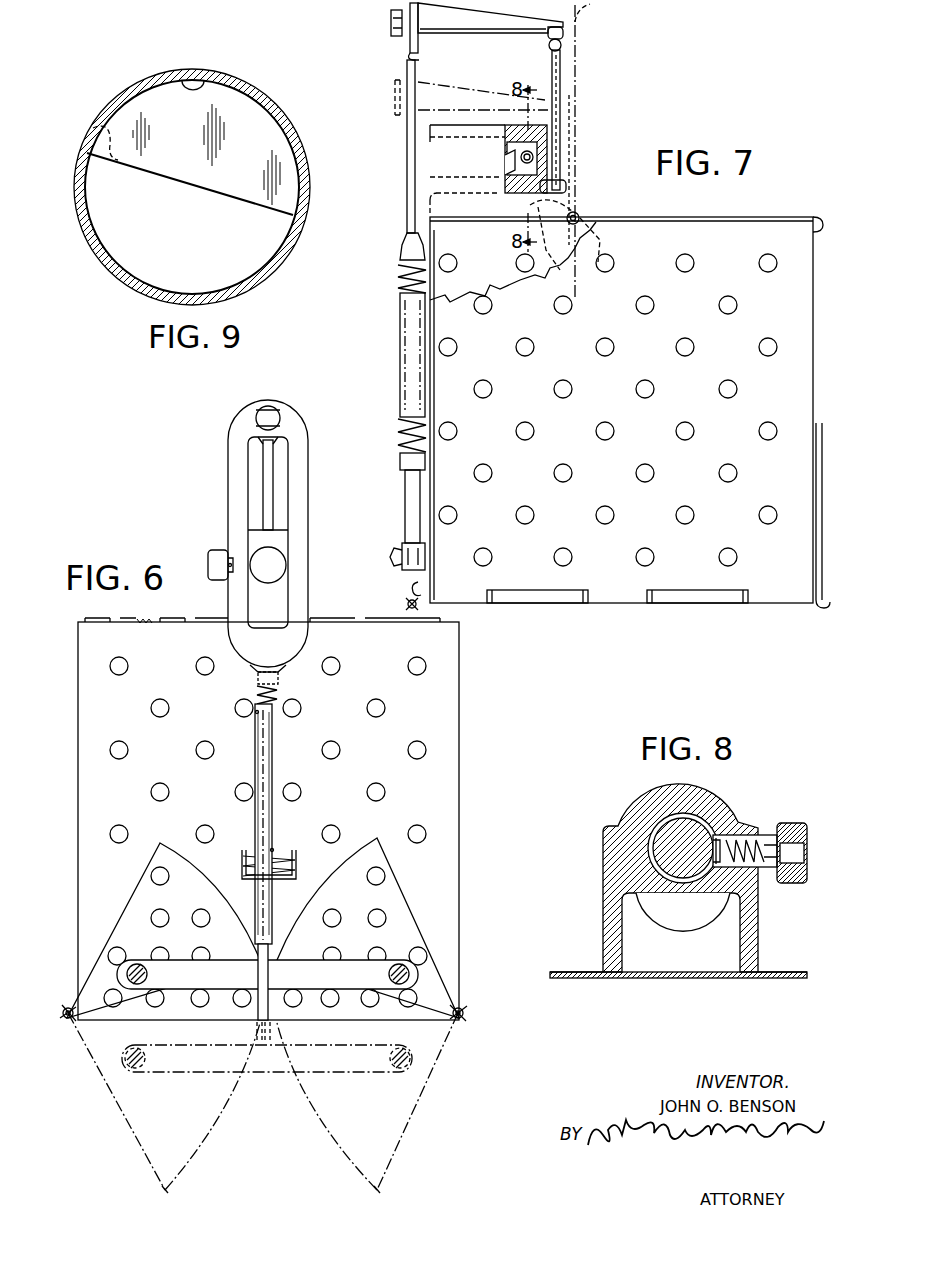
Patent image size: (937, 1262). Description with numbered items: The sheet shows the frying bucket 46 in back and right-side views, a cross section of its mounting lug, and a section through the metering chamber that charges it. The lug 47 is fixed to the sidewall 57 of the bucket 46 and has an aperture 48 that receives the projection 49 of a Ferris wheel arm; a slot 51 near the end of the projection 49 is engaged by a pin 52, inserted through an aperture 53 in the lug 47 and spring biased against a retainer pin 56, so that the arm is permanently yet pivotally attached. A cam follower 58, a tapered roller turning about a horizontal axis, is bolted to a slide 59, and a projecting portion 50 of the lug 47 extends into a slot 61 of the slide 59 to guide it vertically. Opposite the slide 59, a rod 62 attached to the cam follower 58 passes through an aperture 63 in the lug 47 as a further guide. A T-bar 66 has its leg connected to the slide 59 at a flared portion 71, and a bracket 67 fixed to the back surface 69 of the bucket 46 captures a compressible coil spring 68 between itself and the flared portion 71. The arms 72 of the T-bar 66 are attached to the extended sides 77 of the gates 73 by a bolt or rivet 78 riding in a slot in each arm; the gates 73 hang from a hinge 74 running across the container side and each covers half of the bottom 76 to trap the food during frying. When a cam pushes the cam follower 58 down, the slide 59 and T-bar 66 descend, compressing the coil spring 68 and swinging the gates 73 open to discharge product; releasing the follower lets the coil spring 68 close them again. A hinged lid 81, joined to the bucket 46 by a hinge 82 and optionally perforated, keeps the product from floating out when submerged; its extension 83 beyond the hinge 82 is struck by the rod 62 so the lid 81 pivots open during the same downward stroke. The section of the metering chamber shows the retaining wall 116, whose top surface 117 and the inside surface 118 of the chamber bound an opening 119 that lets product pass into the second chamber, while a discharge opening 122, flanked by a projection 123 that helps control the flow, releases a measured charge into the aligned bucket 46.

In FIG. 7, the bucket 46 is at (806, 323).
In FIG. 6, the bucket 46 is at (461, 812).
In FIG. 8, the bucket 46 is at (590, 980).
In FIG. 7, the lug 47 is at (404, 152).
In FIG. 8, the lug 47 is at (625, 806).
In FIG. 7, the aperture 48 is at (470, 150).
In FIG. 8, the projection 49 is at (683, 872).
In FIG. 7, the projecting portion 50 is at (545, 150).
In FIG. 6, the projecting portion 50 is at (273, 568).
In FIG. 8, the slot 51 is at (648, 845).
In FIG. 8, the pin 52 is at (720, 852).
In FIG. 8, the aperture 53 is at (752, 836).
In FIG. 8, the retainer pin 56 is at (800, 852).
In FIG. 8, the sidewall 57 is at (585, 972).
In FIG. 7, the cam follower 58 is at (493, 24).
In FIG. 7, the slide 59 is at (420, 48).
In FIG. 6, the slide 59 is at (300, 518).
In FIG. 6, the slot 61 is at (285, 490).
In FIG. 7, the rod 62 is at (552, 72).
In FIG. 6, the rod 62 is at (263, 488).
In FIG. 7, the aperture 63 is at (566, 186).
In FIG. 7, the T-bar 66 is at (403, 515).
In FIG. 6, the T-bar 66 is at (268, 905).
In FIG. 6, the bracket 67 is at (242, 855).
In FIG. 6, the coil spring 68 is at (275, 692).
In FIG. 6, the back surface 69 is at (438, 846).
In FIG. 6, the flared portion 71 is at (258, 668).
In FIG. 7, the arms 72 is at (420, 555).
In FIG. 6, the arms 72 is at (226, 968).
In FIG. 7, the gates 73 is at (808, 560).
In FIG. 6, the gates 73 is at (172, 1008).
In FIG. 7, the hinge 74 is at (408, 601).
In FIG. 6, the hinge 74 is at (61, 1009).
In FIG. 6, the bottom 76 is at (392, 1012).
In FIG. 6, the extended sides 77 is at (145, 895).
In FIG. 7, the bolt or rivet 78 is at (398, 552).
In FIG. 6, the bolt or rivet 78 is at (398, 964).
In FIG. 7, the lid 81 is at (578, 85).
In FIG. 7, the hinge 82 is at (590, 220).
In FIG. 7, the extension 83 is at (577, 212).
In FIG. 9, the retaining wall 116 is at (195, 150).
In FIG. 9, the top surface 117 is at (222, 196).
In FIG. 9, the inside surface 118 is at (206, 80).
In FIG. 9, the opening 119 is at (185, 258).
In FIG. 9, the opening 122 is at (84, 206).
In FIG. 9, the projection 123 is at (96, 110).